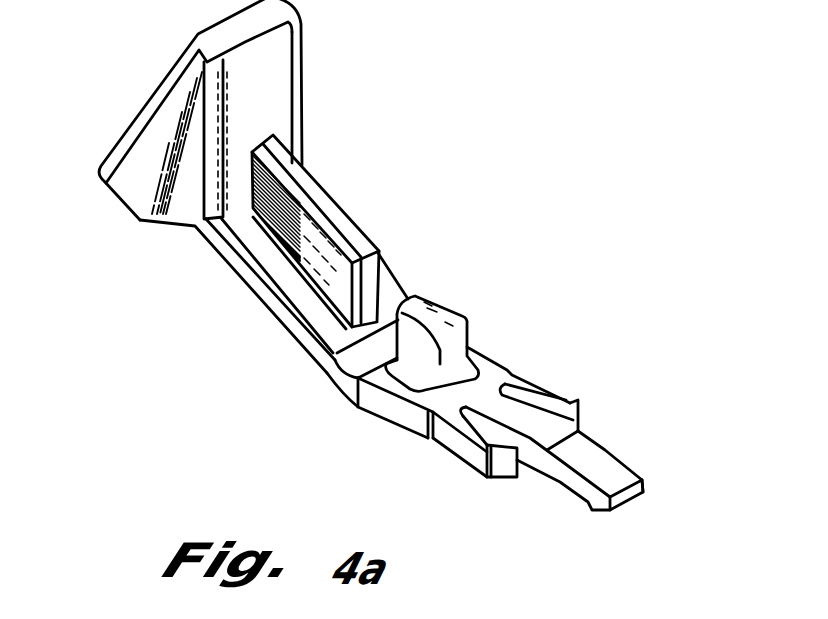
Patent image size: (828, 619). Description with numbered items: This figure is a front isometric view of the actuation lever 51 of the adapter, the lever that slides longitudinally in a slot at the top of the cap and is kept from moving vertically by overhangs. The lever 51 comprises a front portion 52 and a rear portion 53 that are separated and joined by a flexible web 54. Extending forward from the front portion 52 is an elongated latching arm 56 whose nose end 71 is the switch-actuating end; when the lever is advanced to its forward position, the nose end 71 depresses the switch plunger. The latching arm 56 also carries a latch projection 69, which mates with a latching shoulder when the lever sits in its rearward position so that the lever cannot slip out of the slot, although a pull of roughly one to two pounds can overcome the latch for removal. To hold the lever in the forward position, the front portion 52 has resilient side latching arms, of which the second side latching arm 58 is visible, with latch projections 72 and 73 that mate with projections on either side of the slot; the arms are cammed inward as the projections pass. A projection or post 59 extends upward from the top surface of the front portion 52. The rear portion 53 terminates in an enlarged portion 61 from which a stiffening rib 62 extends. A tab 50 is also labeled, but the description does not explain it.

The tab 50 is at (453, 474).
The actuation lever 51 is at (268, 324).
The front portion 52 is at (519, 403).
The rear portion 53 is at (220, 280).
The flexible web 54 is at (340, 387).
The latching arm 56 is at (619, 487).
The second side latching arm 58 is at (593, 372).
The post 59 is at (457, 310).
The enlarged portion 61 is at (145, 102).
The stiffening rib 62 is at (343, 217).
The latch projection 69 is at (588, 505).
The nose end 71 is at (630, 492).
The latch projection 72 is at (503, 463).
The latch projection 73 is at (580, 424).